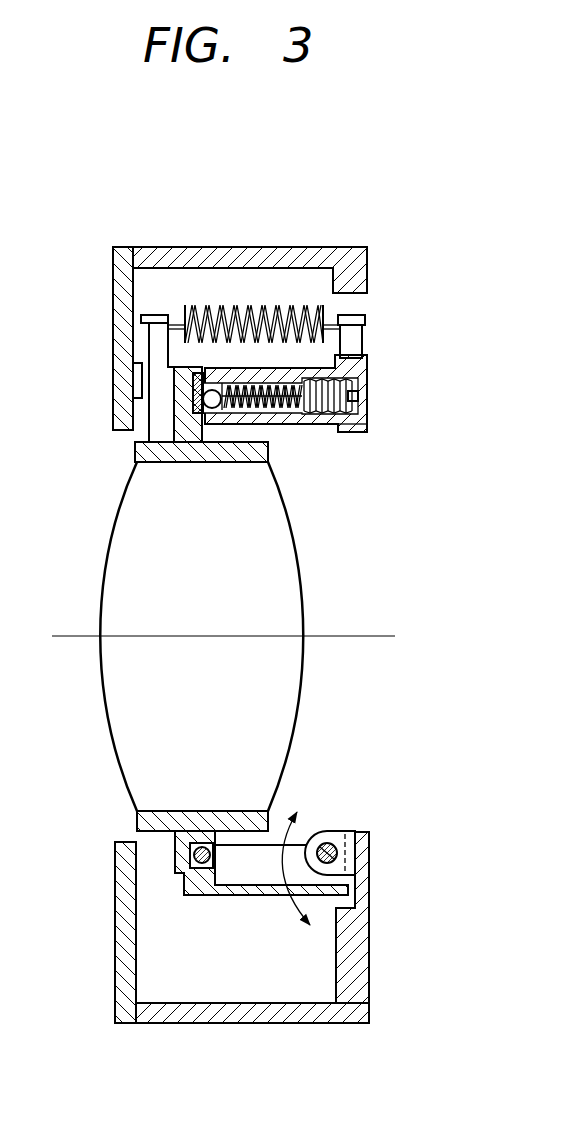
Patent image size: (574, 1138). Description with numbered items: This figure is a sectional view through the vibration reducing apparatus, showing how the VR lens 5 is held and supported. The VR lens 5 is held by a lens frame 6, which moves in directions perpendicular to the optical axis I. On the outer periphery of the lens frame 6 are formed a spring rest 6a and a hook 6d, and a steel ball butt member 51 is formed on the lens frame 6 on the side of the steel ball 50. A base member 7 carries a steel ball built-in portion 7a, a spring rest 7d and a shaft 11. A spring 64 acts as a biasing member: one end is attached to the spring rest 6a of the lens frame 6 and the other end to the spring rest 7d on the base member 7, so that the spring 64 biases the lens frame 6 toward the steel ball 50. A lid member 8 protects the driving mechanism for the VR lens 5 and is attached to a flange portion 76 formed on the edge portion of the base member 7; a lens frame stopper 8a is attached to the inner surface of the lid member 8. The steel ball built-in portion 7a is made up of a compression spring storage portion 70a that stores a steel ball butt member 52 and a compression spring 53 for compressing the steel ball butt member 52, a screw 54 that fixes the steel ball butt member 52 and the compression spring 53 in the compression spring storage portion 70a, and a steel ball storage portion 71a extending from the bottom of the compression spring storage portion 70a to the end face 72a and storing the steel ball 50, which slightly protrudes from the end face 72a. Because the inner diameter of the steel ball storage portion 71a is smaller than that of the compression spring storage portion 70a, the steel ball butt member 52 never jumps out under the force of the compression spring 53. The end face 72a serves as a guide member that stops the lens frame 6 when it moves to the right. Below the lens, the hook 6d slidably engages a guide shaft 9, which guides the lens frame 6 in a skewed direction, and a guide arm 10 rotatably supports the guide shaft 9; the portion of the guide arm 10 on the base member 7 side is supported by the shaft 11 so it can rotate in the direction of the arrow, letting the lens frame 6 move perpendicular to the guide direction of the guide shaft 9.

The VR lens 5 is at (110, 722).
The lens frame 6 is at (137, 450).
The spring rest 6a is at (148, 345).
The hook 6d is at (170, 861).
The base member 7 is at (367, 260).
The steel ball built-in portion 7a is at (315, 358).
The spring rest 7d is at (362, 340).
The lid member 8 is at (113, 275).
The lens frame stopper 8a is at (135, 380).
The guide shaft 9 is at (207, 875).
The guide arm 10 is at (267, 873).
The shaft 11 is at (330, 843).
The steel ball 50 is at (215, 388).
The steel ball butt member 51 is at (196, 375).
The steel ball butt member 52 is at (232, 365).
The compression spring 53 is at (270, 365).
The screw 54 is at (362, 400).
The spring 64 is at (248, 292).
The compression spring storage portion 70a is at (313, 428).
The steel ball storage portion 71a is at (260, 448).
The end face 72a is at (176, 400).
The flange portion 76 is at (182, 330).
The optical axis I is at (65, 636).